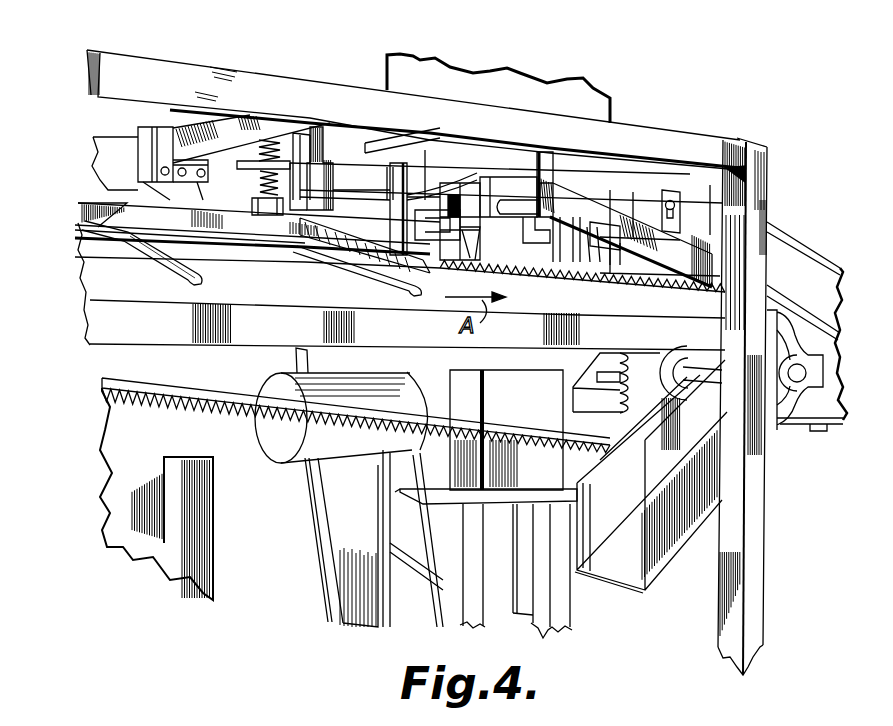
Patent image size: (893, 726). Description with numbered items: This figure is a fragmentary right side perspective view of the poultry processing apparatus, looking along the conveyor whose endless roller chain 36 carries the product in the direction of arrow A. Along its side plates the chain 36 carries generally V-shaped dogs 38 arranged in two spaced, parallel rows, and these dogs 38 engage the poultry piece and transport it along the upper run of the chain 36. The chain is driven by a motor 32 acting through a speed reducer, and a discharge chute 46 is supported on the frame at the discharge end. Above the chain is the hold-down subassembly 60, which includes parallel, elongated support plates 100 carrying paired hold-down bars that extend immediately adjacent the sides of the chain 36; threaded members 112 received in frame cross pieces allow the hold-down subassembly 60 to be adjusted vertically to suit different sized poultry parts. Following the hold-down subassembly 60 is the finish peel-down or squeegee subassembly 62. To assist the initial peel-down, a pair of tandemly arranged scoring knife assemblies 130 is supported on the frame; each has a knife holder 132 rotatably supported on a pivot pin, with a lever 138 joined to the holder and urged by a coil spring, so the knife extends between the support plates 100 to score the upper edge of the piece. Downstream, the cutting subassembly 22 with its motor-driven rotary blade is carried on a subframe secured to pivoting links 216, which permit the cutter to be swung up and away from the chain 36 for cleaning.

The cutting subassembly 22 is at (587, 192).
The pivoting links 216 is at (622, 218).
The finish peel-down or squeegee subassembly 62 is at (403, 190).
The lever 138 is at (137, 187).
The scoring knife assembly 130 is at (185, 113).
The knife holder 132 is at (115, 251).
The threaded members 112 is at (282, 172).
The support plates 100 is at (262, 224).
The hold-down subassembly 60 is at (158, 280).
The dogs 38 is at (582, 288).
The roller chain 36 is at (260, 415).
The motor 32 is at (347, 440).
The discharge chute 46 is at (657, 550).